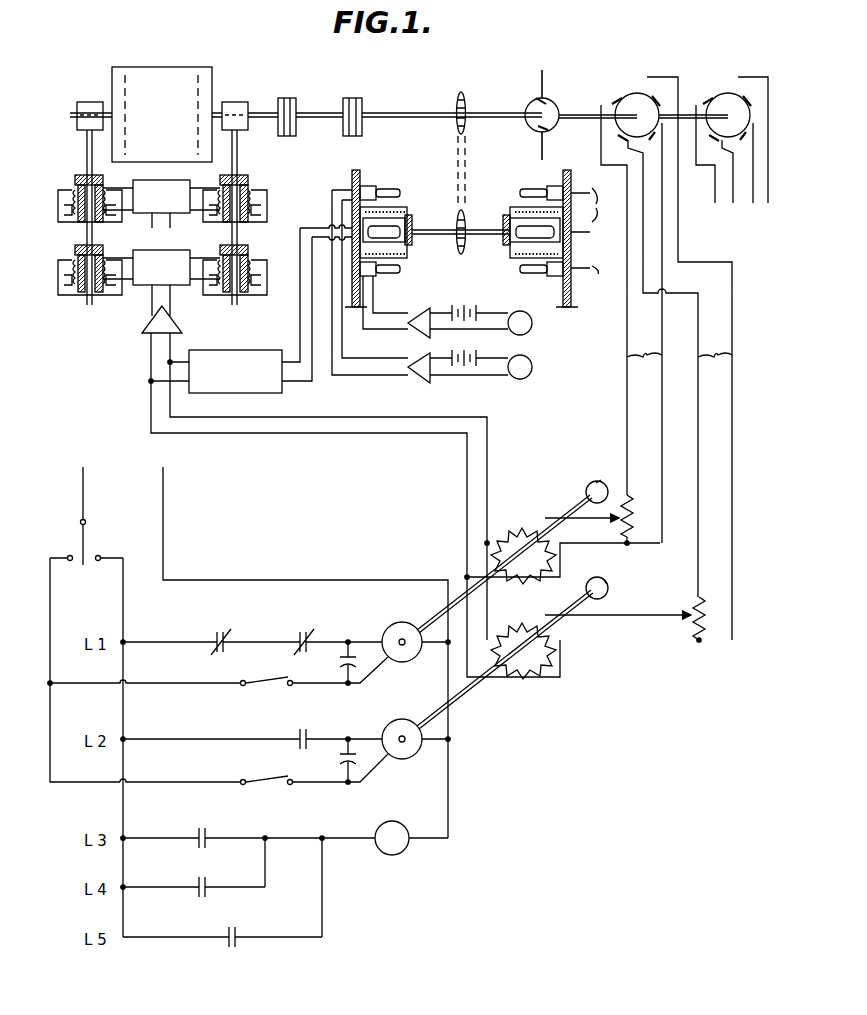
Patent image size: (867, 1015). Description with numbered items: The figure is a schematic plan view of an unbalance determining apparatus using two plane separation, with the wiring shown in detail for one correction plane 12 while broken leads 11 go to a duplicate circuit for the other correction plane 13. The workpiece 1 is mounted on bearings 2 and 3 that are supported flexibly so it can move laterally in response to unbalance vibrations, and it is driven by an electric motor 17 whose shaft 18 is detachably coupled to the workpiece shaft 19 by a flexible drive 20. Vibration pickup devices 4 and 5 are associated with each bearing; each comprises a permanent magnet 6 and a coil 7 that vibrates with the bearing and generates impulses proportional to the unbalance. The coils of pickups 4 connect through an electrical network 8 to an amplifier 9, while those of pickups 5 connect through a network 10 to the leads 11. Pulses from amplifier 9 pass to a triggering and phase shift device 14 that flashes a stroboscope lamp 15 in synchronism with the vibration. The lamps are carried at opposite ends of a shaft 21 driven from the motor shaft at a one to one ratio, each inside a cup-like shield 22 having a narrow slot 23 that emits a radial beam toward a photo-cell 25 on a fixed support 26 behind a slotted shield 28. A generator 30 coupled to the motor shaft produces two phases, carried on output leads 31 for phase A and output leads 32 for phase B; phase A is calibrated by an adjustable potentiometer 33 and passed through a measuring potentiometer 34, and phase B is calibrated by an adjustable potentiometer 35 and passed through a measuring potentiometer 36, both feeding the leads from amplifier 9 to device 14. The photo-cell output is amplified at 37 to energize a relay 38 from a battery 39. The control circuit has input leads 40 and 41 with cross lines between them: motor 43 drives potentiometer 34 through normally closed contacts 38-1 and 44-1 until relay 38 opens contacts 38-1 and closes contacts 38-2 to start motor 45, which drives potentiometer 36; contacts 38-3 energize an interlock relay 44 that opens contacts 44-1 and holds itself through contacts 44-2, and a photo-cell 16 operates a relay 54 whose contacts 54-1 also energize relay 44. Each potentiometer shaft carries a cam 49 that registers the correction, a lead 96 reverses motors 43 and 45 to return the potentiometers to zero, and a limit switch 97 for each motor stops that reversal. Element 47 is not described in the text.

The workpiece 1 is at (176, 67).
The bearing 2 is at (84, 102).
The bearing 3 is at (236, 102).
The vibration pickup device 4 is at (57, 276).
The vibration pickup device 5 is at (57, 206).
The permanent magnet 6 is at (58, 222).
The coil 7 is at (72, 180).
The electrical network 8 is at (142, 250).
The amplifier 9 is at (142, 326).
The electrical network 10 is at (147, 180).
The broken leads 11 is at (158, 228).
The correction plane 12 is at (128, 76).
The correction plane 13 is at (199, 76).
The triggering and phase shift device 14 is at (234, 350).
The stroboscope lamp 15 is at (400, 228).
The photo-cell 16 is at (386, 188).
The electric motor 17 is at (548, 100).
The motor shaft 18 is at (478, 110).
The workpiece shaft 19 is at (266, 110).
The flexible drive 20 is at (322, 110).
The shaft 21 is at (440, 229).
The cup-like shield 22 is at (408, 250).
The slot 23 is at (393, 216).
The photo-cell 25 is at (390, 274).
The fixed support 26 is at (349, 172).
The slotted shield 28 is at (406, 256).
The generator 30 is at (629, 94).
The output leads 31 is at (644, 364).
The output leads 32 is at (715, 364).
The adjustable potentiometer 33 is at (632, 505).
The measuring potentiometer 34 is at (522, 530).
The adjustable potentiometer 35 is at (694, 633).
The measuring potentiometer 36 is at (528, 628).
The amplifier 37 is at (428, 310).
The relay 38 is at (532, 323).
The battery 39 is at (470, 305).
The input lead 40 is at (122, 806).
The input lead 41 is at (450, 782).
The motor 43 is at (402, 631).
The interlock relay 44 is at (392, 828).
The motor 45 is at (402, 728).
The switch 47 is at (78, 532).
The cam 49 is at (592, 481).
The relay 54 is at (532, 367).
The lead 96 is at (48, 646).
The limit switch 97 is at (219, 713).
The relay contacts 38-1 is at (303, 633).
The relay contacts 38-2 is at (303, 728).
The relay contacts 38-3 is at (201, 827).
The relay contacts 44-1 is at (217, 633).
The relay contacts 44-2 is at (220, 878).
The relay contacts 54-1 is at (229, 949).